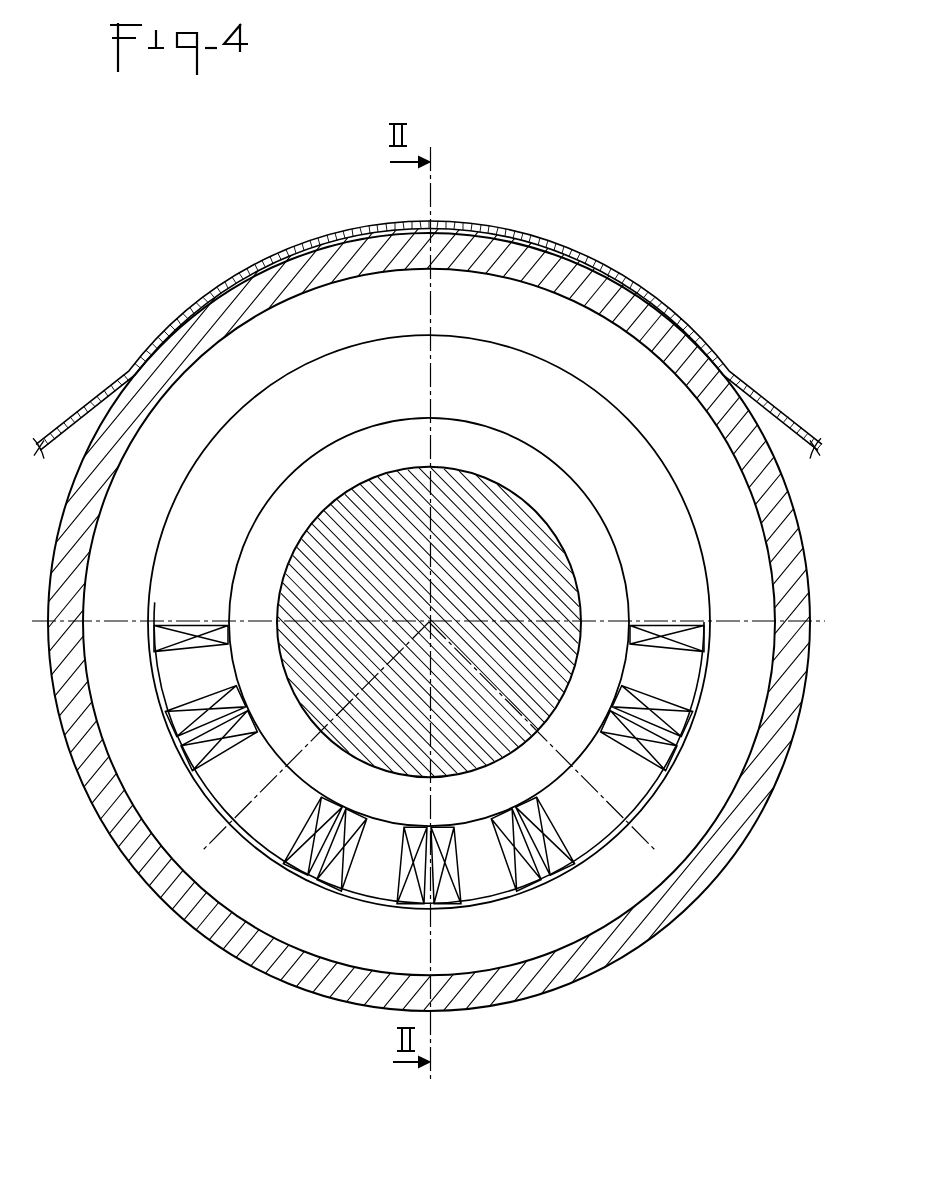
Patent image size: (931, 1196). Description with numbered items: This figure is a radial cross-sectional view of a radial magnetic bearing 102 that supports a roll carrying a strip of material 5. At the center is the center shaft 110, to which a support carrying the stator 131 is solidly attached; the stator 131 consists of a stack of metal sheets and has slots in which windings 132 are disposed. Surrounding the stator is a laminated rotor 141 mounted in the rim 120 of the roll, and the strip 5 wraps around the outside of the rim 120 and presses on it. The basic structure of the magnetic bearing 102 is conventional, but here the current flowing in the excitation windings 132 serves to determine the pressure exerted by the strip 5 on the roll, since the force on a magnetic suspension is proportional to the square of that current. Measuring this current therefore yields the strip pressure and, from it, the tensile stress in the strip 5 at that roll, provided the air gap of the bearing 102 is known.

The strip of material 5 is at (777, 407).
The radial magnetic bearing 102 is at (142, 891).
The center shaft 110 is at (366, 508).
The rim 120 is at (737, 833).
The stator 131 is at (600, 823).
The windings 132 is at (562, 862).
The laminated rotor 141 is at (677, 850).